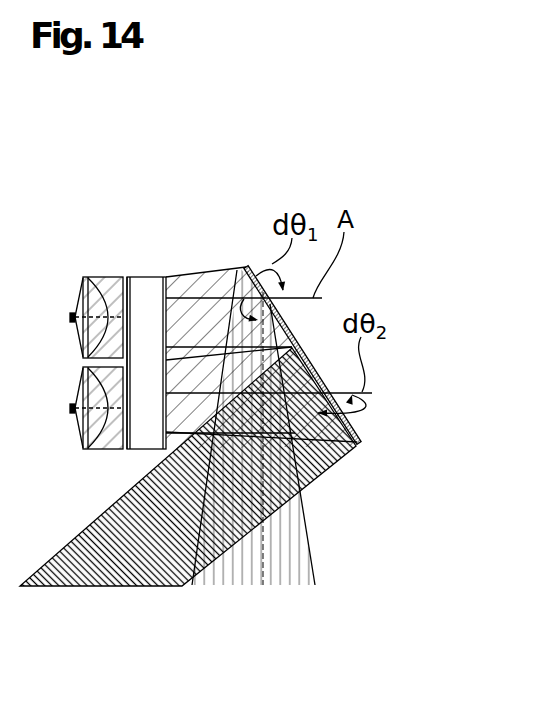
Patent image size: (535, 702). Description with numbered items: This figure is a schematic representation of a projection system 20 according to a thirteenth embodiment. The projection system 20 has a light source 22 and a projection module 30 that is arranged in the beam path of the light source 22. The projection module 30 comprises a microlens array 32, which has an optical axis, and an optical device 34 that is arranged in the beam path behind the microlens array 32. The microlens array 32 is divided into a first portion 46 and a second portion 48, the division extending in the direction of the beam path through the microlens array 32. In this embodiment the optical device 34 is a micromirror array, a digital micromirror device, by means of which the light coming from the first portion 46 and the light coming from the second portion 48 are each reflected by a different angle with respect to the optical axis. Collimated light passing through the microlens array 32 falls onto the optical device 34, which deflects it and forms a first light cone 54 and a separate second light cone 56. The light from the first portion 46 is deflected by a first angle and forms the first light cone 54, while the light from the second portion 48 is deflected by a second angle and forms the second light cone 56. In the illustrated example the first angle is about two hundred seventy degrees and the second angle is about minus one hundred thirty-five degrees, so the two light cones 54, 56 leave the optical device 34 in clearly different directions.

The projection system 20 is at (90, 284).
The light source 22 is at (92, 260).
The projection module 30 is at (203, 228).
The microlens array 32 is at (159, 300).
The optical device 34 is at (256, 277).
The first portion 46 is at (157, 322).
The second portion 48 is at (157, 419).
The first light cone 54 is at (278, 568).
The second light cone 56 is at (145, 568).